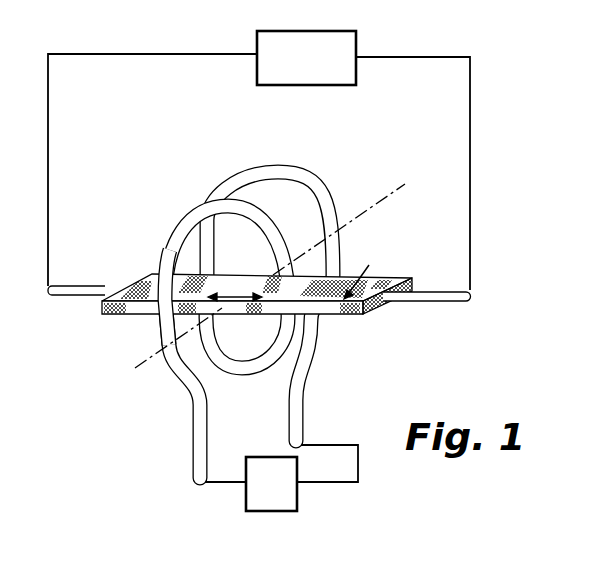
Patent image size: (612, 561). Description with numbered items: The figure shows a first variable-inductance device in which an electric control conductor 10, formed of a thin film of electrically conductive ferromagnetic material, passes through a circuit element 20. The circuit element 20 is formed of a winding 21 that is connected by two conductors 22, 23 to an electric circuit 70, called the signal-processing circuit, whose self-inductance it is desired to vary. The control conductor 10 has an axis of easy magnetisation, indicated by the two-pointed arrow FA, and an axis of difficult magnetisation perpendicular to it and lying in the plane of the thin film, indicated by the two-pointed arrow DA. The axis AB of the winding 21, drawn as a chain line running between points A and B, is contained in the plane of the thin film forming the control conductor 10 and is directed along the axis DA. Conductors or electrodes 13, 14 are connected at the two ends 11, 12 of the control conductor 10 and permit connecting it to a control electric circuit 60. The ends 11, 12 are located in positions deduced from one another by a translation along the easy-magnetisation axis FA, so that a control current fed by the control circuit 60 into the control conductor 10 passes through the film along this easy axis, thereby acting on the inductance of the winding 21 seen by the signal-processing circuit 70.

The electric control conductor 10 is at (213, 277).
The end of the control conductor 11 is at (148, 277).
The end of the control conductor 12 is at (387, 276).
The conductor or electrode 13 is at (63, 297).
The conductor or electrode 14 is at (452, 301).
The circuit element 20 is at (250, 305).
The winding 21 is at (237, 182).
The conductor 22 is at (199, 449).
The conductor 23 is at (296, 424).
The control electric circuit 60 is at (259, 160).
The electric circuit (signal-processing circuit) 70 is at (279, 478).
The axis of easy magnetisation FA is at (235, 287).
The axis of difficult magnetisation DA is at (362, 271).
The end point of winding axis AB A is at (167, 356).
The end point of winding axis AB B is at (348, 229).